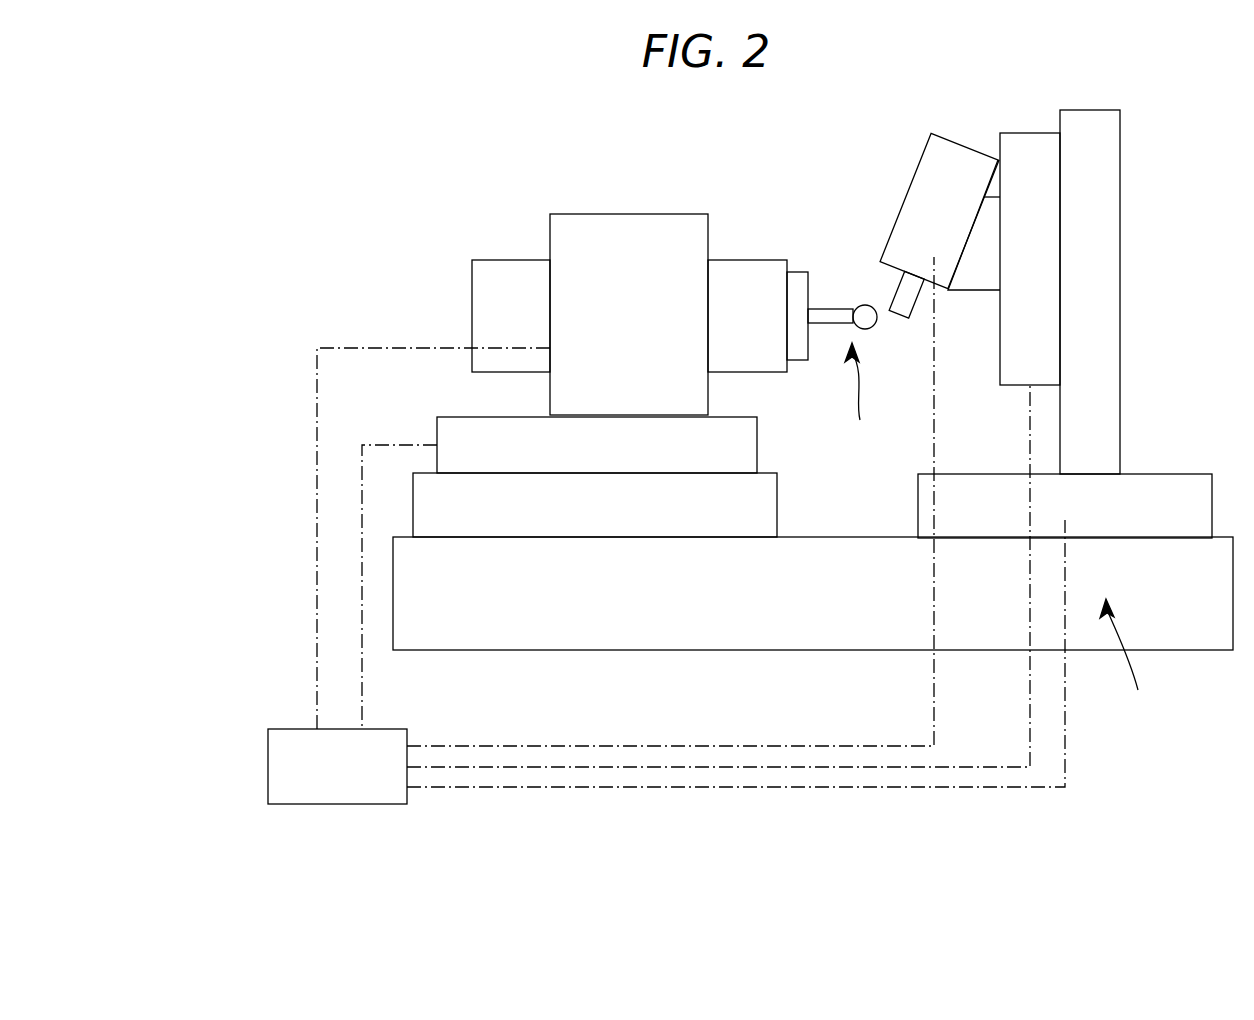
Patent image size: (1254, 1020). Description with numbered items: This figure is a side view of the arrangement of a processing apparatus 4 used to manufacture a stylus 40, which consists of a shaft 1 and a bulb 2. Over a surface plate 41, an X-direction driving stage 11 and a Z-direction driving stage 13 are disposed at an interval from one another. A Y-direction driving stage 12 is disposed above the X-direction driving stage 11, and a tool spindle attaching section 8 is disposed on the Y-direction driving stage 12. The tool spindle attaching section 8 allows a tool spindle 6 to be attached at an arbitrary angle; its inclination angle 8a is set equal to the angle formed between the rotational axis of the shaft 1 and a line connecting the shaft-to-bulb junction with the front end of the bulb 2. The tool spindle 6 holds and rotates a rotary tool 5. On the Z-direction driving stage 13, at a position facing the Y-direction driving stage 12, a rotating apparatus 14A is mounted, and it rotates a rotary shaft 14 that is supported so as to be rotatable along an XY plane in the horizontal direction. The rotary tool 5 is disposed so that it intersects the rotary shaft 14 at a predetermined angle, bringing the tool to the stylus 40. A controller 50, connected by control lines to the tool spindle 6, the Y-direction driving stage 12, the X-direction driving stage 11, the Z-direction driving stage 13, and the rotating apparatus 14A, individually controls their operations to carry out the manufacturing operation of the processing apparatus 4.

The shaft 1 is at (831, 310).
The bulb 2 is at (865, 305).
The processing apparatus 4 is at (1125, 661).
The rotary tool 5 is at (910, 300).
The tool spindle 6 is at (945, 165).
The tool spindle attaching section 8 is at (978, 280).
The inclination angle 8a is at (987, 200).
The X-direction driving stage 11 is at (1161, 497).
The Y-direction driving stage 12 is at (1031, 165).
The Z-direction driving stage 13 is at (463, 428).
The rotary shaft 14 is at (508, 275).
The rotating apparatus 14A is at (629, 240).
The stylus 40 is at (857, 397).
The surface plate 41 is at (815, 628).
The controller 50 is at (268, 768).